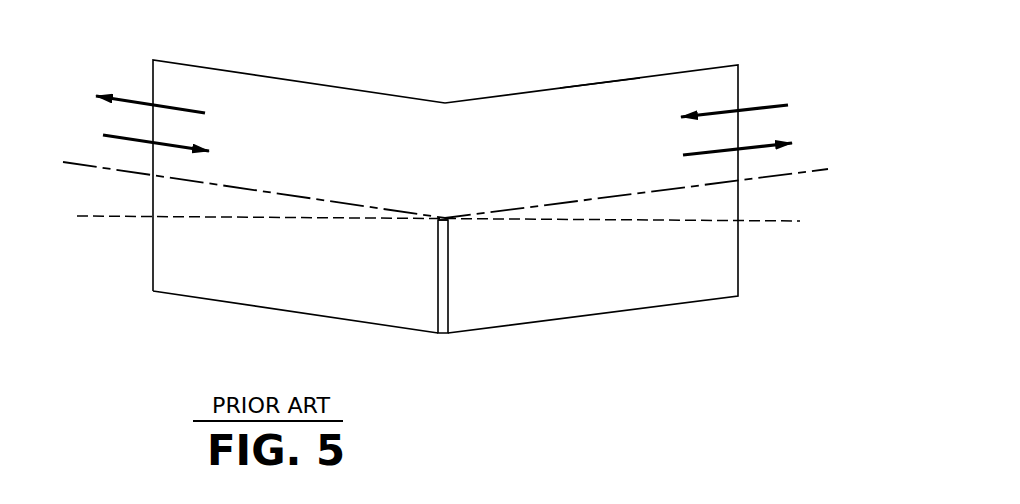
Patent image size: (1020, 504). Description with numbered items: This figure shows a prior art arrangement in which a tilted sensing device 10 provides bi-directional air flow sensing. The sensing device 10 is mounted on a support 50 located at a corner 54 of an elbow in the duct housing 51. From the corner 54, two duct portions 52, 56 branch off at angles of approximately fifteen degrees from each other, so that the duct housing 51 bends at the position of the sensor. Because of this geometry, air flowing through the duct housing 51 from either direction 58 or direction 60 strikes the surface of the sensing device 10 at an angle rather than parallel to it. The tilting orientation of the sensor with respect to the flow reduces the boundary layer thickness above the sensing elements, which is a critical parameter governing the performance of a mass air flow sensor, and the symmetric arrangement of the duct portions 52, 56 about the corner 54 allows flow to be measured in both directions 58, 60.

The sensing device 10 is at (462, 232).
The support 50 is at (445, 208).
The duct housing 51 is at (600, 80).
The duct portion 52 is at (290, 80).
The corner 54 is at (443, 335).
The duct portion 56 is at (667, 73).
The direction 58 is at (132, 98).
The direction 60 is at (117, 134).